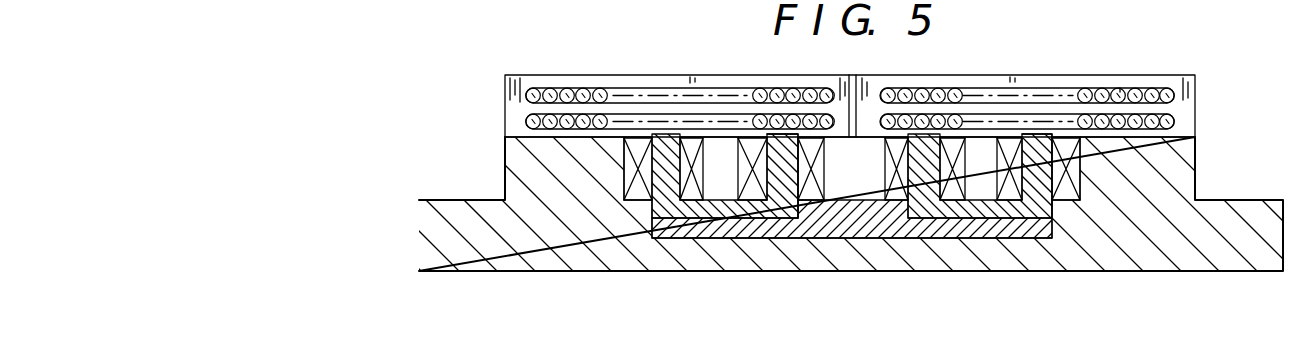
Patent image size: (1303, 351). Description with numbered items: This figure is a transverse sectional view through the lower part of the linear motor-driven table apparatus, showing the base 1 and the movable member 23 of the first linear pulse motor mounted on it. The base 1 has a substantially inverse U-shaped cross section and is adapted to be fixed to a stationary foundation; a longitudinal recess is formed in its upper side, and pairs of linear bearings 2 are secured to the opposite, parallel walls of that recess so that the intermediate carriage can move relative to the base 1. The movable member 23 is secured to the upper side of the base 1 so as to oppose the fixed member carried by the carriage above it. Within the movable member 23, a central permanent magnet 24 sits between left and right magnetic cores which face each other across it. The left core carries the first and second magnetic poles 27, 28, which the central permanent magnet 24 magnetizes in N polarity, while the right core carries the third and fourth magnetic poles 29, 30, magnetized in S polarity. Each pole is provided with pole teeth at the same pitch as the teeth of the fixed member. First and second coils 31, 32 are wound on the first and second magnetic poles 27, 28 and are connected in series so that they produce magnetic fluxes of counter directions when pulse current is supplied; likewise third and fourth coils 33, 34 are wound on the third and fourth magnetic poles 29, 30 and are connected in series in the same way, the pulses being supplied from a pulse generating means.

The base 1 is at (1197, 160).
The linear bearings 2 is at (505, 105).
The movable member 23 is at (865, 245).
The central permanent magnet 24 is at (897, 240).
The first magnetic pole 27 is at (663, 162).
The second magnetic pole 28 is at (790, 177).
The third magnetic pole 29 is at (917, 152).
The fourth magnetic pole 30 is at (1045, 170).
The first coil 31 is at (690, 198).
The second coil 32 is at (812, 198).
The third coil 33 is at (953, 198).
The fourth coil 34 is at (1066, 198).